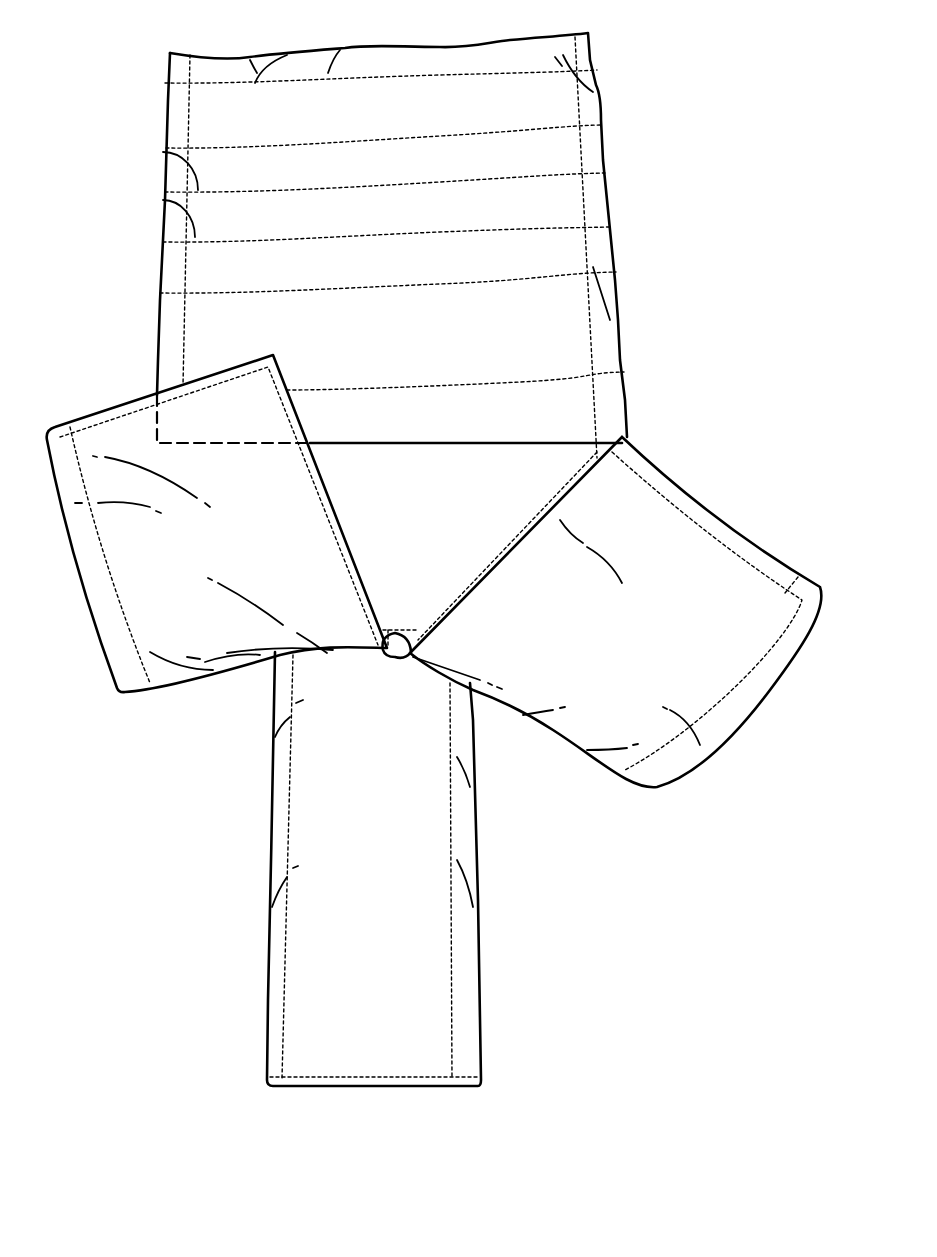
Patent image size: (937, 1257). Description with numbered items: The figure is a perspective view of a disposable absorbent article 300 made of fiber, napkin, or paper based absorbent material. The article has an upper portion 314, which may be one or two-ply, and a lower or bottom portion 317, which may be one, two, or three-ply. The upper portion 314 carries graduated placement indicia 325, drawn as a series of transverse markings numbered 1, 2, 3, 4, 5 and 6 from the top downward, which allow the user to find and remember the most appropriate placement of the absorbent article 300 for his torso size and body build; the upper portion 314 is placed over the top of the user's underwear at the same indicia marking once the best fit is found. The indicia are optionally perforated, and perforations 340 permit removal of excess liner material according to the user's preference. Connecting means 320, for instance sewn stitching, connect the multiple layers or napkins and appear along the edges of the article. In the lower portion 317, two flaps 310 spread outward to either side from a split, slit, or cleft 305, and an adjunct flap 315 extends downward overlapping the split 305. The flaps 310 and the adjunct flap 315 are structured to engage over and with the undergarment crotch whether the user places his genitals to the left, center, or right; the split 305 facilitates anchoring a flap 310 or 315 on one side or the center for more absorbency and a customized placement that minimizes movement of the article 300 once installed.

The disposable absorbent article 300 is at (200, 782).
The split 305 is at (408, 658).
The flaps 310 is at (141, 395).
The upper portion 314 is at (523, 427).
The adjunct flap 315 is at (480, 818).
The lower portion 317 is at (402, 595).
The connecting means 320 is at (187, 272).
The graduated placement indicia 325 is at (572, 172).
The perforations 340 is at (163, 152).
The section 1 is at (381, 97).
The section 2 is at (383, 149).
The section 3 is at (385, 199).
The section 4 is at (386, 251).
The section 5 is at (388, 299).
The section 6 is at (455, 368).